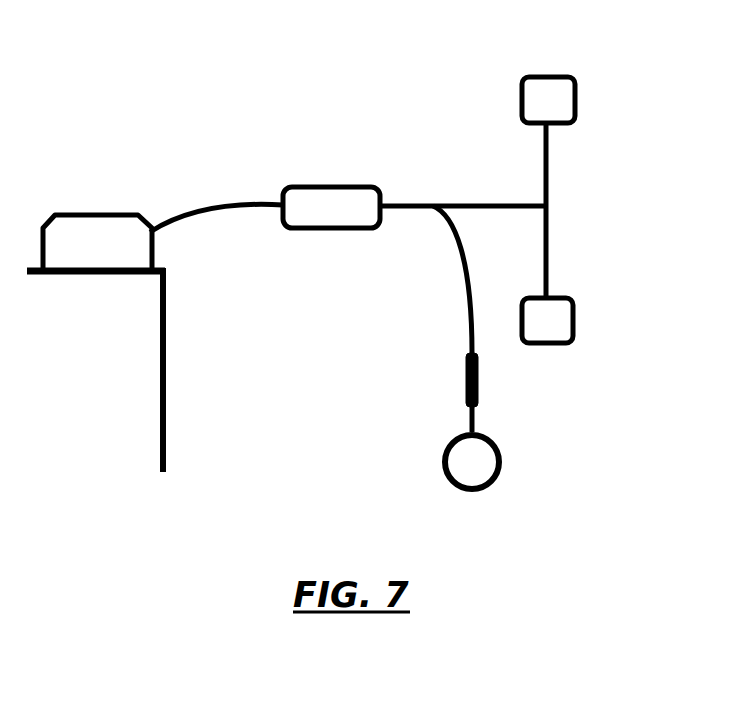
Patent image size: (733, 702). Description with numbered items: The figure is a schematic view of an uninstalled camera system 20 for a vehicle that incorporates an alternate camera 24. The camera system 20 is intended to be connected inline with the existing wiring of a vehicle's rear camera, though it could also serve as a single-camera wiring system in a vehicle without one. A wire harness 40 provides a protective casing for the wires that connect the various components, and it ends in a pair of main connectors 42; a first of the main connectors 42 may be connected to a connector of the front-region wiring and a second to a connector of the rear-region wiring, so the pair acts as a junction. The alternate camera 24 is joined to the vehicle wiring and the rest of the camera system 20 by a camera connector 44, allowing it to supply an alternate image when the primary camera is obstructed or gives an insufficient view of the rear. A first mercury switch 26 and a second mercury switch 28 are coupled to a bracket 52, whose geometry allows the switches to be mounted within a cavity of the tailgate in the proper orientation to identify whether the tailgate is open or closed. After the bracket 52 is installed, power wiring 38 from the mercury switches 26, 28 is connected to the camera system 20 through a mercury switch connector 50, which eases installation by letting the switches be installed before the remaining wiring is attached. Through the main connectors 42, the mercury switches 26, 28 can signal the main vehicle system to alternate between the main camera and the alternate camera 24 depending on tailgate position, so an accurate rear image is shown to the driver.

The camera system 20 is at (353, 468).
The alternate camera 24 is at (463, 472).
The first mercury switch 26 is at (118, 211).
The second mercury switch 28 is at (87, 243).
The power wiring 38 is at (217, 213).
The wire harness 40 is at (564, 195).
The main connector 42 is at (550, 98).
The camera connector 44 is at (465, 380).
The mercury switch connector 50 is at (350, 205).
The bracket 52 is at (160, 368).